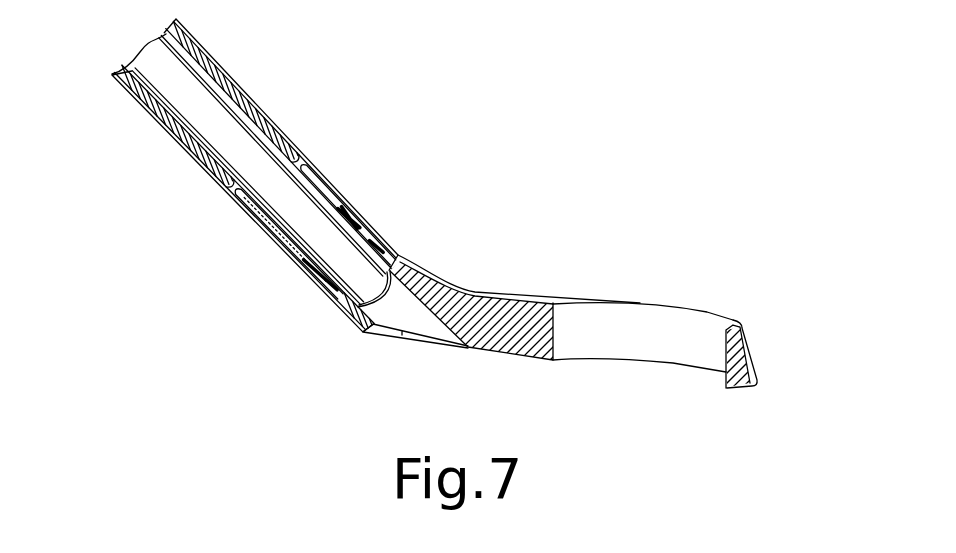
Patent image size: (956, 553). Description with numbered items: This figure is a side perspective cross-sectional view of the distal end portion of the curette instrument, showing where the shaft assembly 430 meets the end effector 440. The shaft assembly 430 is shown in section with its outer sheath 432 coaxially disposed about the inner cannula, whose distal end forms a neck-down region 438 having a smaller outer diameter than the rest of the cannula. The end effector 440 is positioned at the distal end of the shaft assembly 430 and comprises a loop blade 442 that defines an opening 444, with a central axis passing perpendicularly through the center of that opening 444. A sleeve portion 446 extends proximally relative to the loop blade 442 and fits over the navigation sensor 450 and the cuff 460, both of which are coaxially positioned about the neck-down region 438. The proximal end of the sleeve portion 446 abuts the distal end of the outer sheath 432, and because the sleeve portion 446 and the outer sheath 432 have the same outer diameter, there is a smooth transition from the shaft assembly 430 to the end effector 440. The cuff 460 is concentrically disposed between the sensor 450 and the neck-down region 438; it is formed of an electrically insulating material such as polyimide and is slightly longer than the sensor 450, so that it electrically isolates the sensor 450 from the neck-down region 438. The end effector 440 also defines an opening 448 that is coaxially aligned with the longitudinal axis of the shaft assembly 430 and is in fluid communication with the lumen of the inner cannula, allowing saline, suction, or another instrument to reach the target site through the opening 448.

The shaft assembly 430 is at (150, 152).
The outer sheath 432 is at (204, 56).
The neck-down region 438 is at (297, 262).
The end effector 440 is at (680, 206).
The loop blade 442 is at (703, 318).
The opening 444 is at (633, 307).
The sleeve portion 446 is at (317, 167).
The opening 448 is at (408, 343).
The navigation sensor 450 is at (357, 213).
The cuff 460 is at (380, 233).